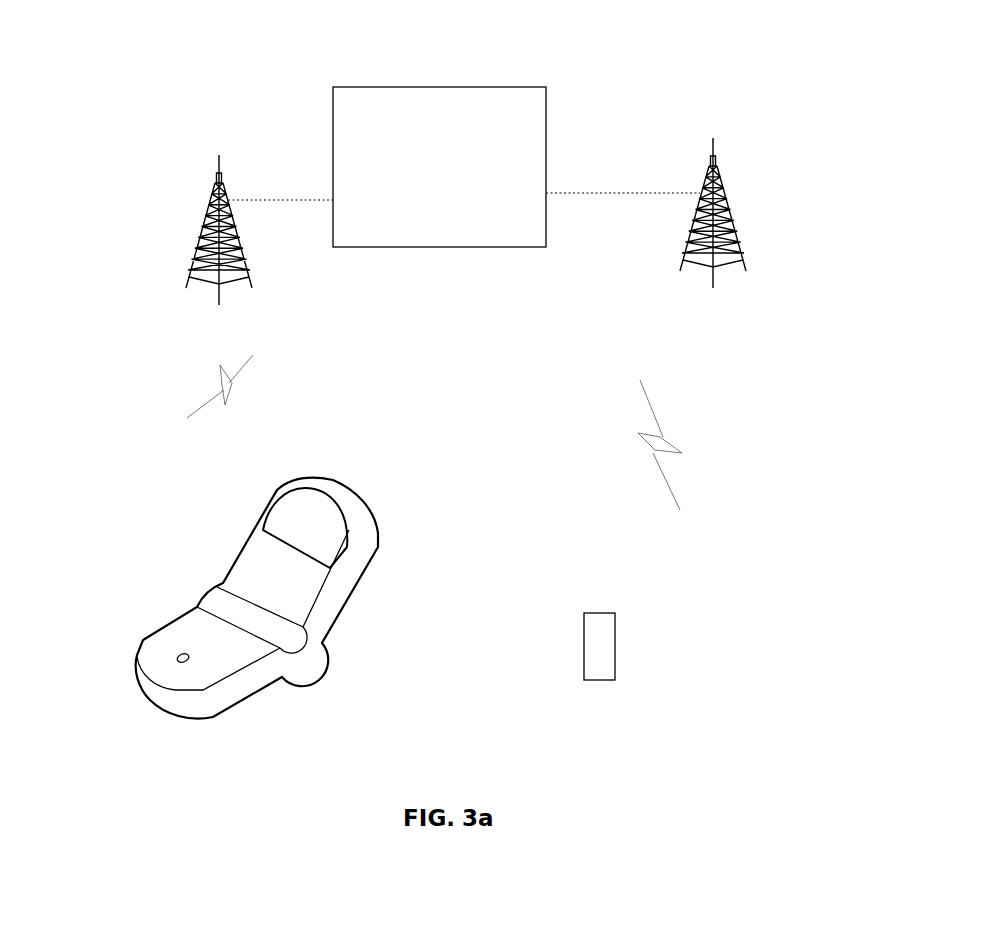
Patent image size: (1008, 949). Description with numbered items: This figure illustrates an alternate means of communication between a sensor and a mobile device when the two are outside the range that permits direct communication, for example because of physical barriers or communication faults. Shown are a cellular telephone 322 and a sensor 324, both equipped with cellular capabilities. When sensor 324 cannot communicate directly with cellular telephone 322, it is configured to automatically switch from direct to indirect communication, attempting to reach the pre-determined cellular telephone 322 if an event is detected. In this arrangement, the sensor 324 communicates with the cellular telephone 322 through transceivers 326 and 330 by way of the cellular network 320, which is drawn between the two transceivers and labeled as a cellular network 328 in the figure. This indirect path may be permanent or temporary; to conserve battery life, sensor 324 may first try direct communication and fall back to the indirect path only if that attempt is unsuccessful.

The cellular network 320 is at (460, 31).
The cellular telephone 322 is at (268, 492).
The sensor 324 is at (603, 613).
The transceiver 326 is at (727, 198).
The cellular network 328 is at (421, 146).
The transceiver 330 is at (207, 216).